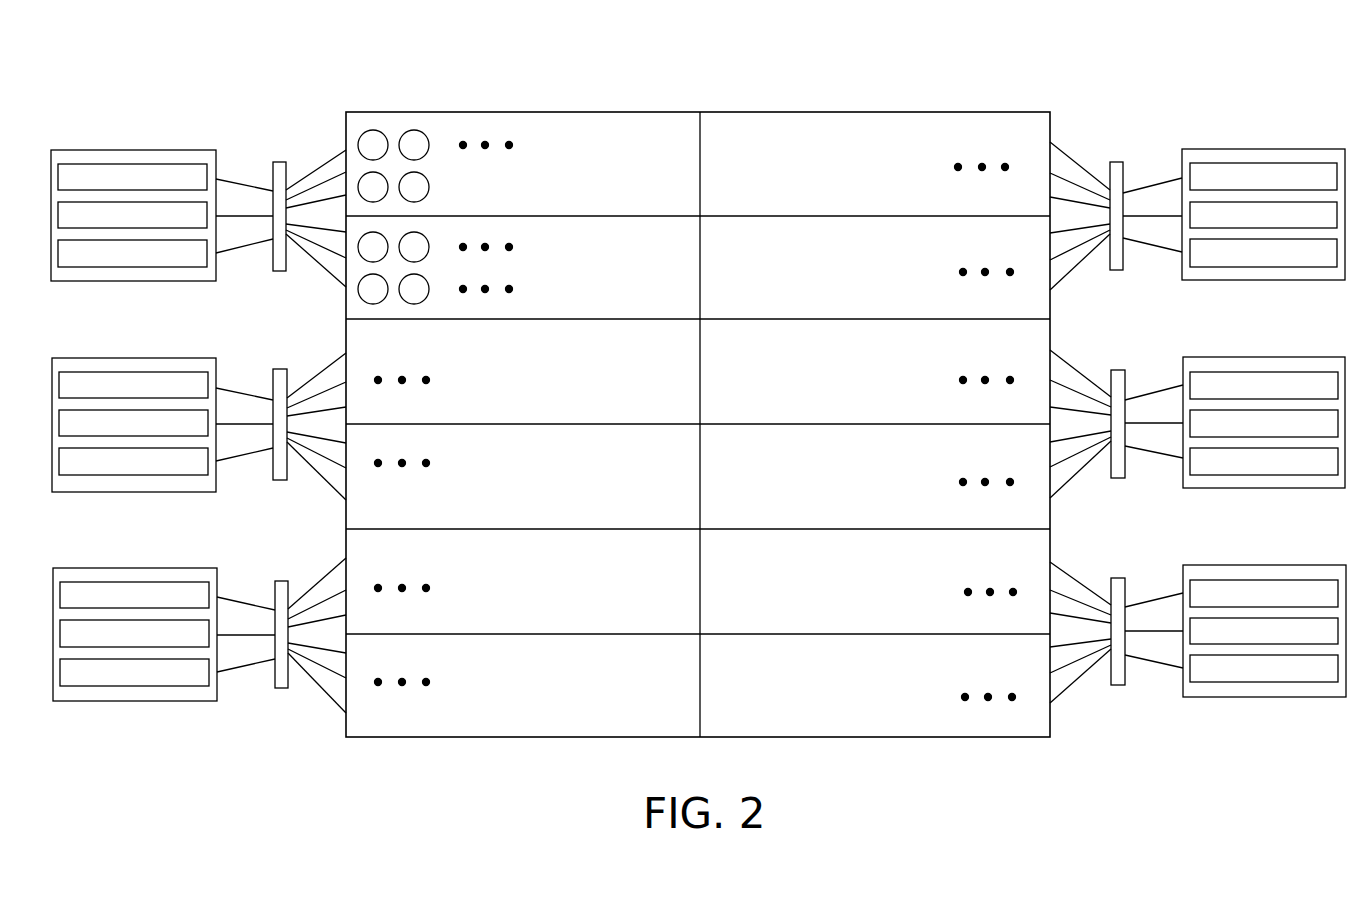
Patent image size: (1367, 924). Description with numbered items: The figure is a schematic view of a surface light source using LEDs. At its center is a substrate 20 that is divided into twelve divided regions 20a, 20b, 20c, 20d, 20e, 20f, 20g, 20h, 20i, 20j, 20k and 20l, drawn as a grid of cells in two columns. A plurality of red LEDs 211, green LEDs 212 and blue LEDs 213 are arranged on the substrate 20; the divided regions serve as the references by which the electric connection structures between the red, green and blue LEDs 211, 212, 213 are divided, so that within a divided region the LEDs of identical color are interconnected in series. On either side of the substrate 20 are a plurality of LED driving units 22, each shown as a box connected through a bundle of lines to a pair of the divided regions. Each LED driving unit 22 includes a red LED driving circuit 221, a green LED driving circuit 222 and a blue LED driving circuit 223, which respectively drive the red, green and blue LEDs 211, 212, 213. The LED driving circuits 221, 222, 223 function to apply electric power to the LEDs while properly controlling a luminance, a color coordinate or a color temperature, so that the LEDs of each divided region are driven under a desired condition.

The substrate 20 is at (993, 92).
The divided region 20a is at (688, 149).
The divided region 20b is at (688, 248).
The divided region 20c is at (688, 350).
The divided region 20d is at (688, 456).
The divided region 20e is at (688, 561).
The divided region 20f is at (688, 663).
The divided region 20g is at (1040, 142).
The divided region 20h is at (1038, 250).
The divided region 20i is at (1035, 354).
The divided region 20j is at (1036, 458).
The divided region 20k is at (1042, 566).
The divided region 20l is at (1035, 667).
The LED driving unit 22 is at (163, 155).
The red LED 211 is at (372, 130).
The green LED 212 is at (420, 130).
The blue LED 213 is at (364, 168).
The red LED driving circuit 221 is at (75, 163).
The green LED driving circuit 222 is at (67, 203).
The blue LED driving circuit 223 is at (86, 268).